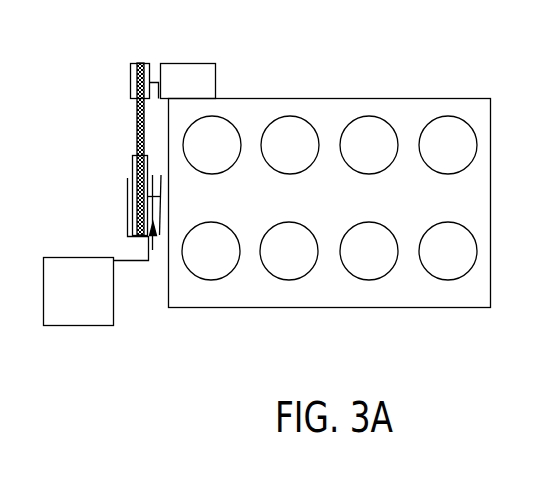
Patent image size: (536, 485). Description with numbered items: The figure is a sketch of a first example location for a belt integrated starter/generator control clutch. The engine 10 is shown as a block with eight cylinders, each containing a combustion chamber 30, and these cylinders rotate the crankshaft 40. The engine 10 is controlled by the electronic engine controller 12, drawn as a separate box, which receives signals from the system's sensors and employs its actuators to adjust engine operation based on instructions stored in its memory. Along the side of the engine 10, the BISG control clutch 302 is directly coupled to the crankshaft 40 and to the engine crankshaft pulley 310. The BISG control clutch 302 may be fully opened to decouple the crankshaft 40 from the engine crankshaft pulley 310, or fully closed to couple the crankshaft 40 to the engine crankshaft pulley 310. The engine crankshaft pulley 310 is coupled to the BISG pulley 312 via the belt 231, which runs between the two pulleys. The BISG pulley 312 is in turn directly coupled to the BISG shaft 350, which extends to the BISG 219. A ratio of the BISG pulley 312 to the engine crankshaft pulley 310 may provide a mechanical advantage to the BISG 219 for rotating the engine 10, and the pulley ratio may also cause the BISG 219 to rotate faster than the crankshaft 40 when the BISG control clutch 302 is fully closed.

The internal combustion engine 10 is at (353, 82).
The electronic engine controller 12 is at (68, 302).
The combustion chamber 30 is at (329, 198).
The crankshaft 40 is at (160, 235).
The BISG 219 is at (173, 63).
The belt 231 is at (131, 178).
The BISG control clutch 302 is at (160, 187).
The engine crankshaft pulley 310 is at (128, 237).
The BISG pulley 312 is at (130, 93).
The BISG shaft 350 is at (158, 81).